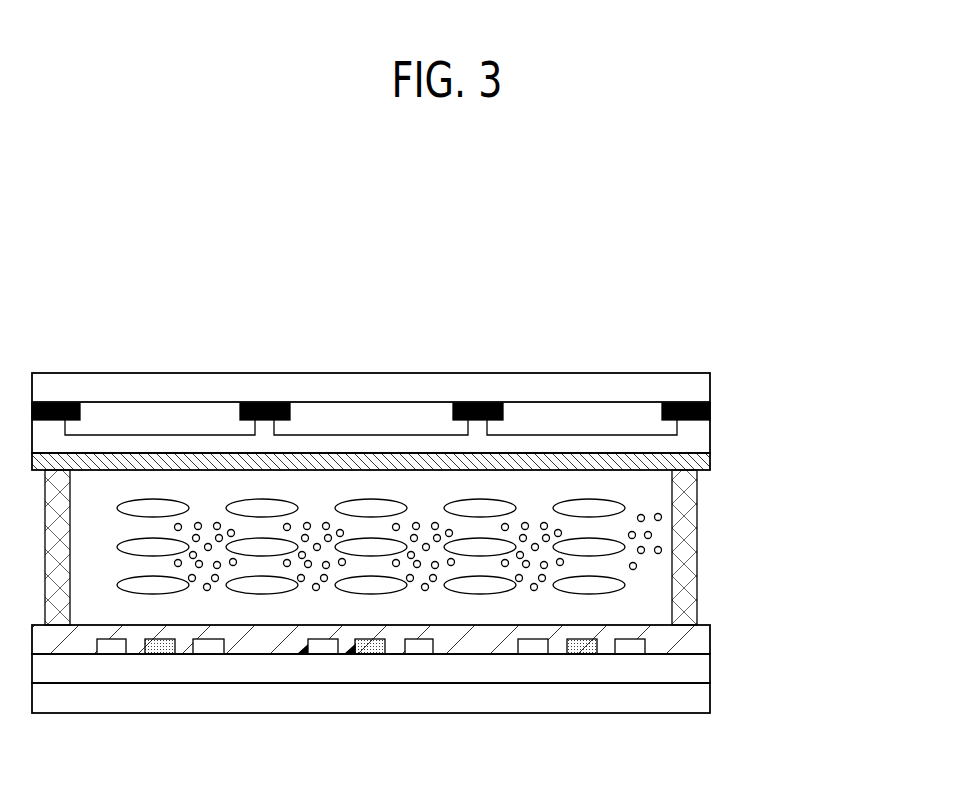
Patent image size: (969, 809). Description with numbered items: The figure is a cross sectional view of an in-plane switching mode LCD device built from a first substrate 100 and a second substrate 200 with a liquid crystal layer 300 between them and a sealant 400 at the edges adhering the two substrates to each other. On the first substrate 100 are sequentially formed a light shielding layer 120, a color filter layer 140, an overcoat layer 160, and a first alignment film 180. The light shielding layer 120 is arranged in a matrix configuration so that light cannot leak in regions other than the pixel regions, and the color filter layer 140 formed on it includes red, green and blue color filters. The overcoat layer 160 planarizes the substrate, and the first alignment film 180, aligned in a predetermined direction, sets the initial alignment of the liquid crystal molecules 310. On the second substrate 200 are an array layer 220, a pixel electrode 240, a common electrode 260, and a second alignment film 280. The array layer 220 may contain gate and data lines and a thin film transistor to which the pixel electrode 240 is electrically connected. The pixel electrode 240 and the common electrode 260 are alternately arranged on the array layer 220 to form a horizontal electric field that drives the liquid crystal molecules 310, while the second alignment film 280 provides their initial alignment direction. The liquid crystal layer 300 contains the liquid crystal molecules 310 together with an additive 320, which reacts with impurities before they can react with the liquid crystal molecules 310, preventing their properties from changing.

The first substrate 100 is at (710, 387).
The light shielding layer 120 is at (478, 403).
The color filter layer 140 is at (617, 412).
The overcoat layer 160 is at (710, 426).
The first alignment film 180 is at (710, 453).
The second substrate 200 is at (710, 697).
The array layer 220 is at (710, 668).
The pixel electrode 240 is at (111, 654).
The common electrode 260 is at (160, 654).
The second alignment film 280 is at (710, 637).
The liquid crystal layer 300 is at (496, 546).
The liquid crystal molecules 310 is at (625, 582).
The additive 320 is at (662, 517).
The sealant 400 is at (697, 612).